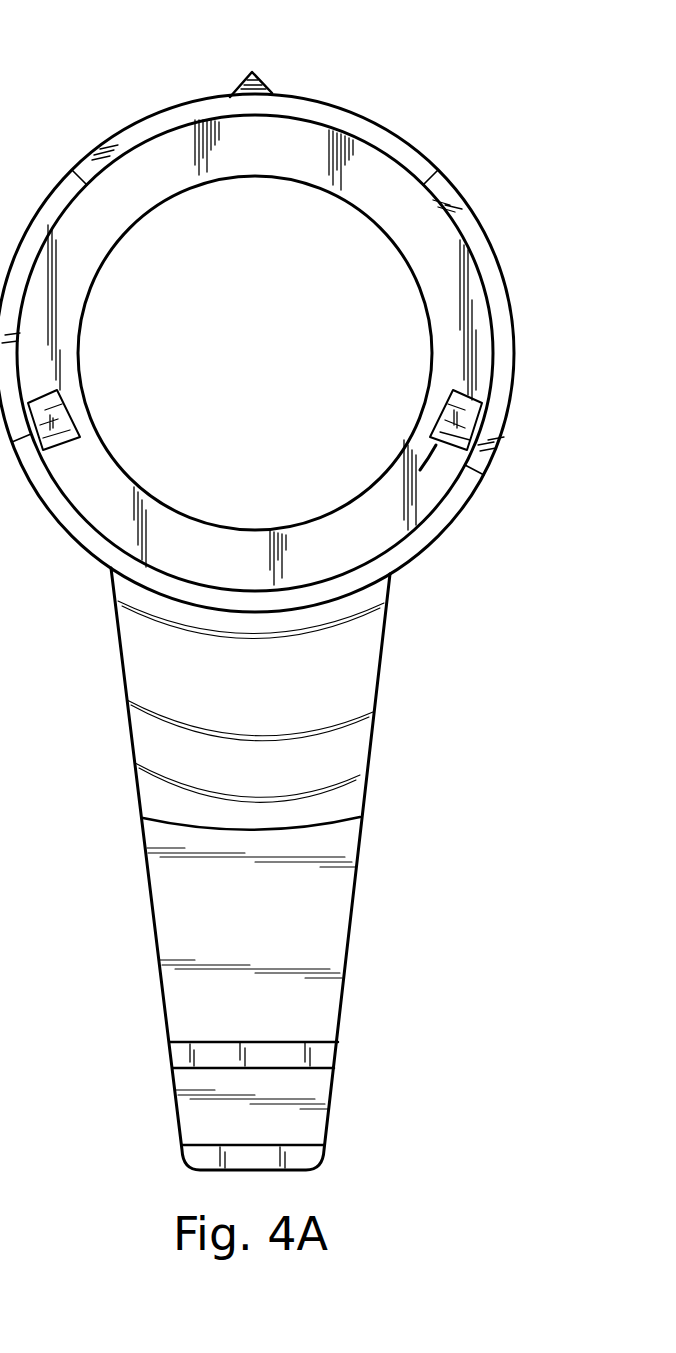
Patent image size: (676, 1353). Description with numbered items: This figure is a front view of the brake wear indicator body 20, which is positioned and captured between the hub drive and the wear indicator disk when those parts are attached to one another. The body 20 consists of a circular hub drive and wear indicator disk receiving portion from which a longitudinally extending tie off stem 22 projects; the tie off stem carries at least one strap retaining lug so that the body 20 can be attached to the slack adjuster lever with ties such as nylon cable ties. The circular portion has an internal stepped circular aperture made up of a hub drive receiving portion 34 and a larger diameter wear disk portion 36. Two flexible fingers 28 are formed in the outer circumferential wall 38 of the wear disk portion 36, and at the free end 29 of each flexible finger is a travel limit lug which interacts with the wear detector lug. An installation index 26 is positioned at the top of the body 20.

The body 20 is at (282, 590).
The tie off stem 22 is at (166, 907).
The installation index 26 is at (238, 88).
The flexible fingers 28 is at (478, 222).
The free end 29 is at (493, 455).
The hub drive receiving portion 34 is at (142, 213).
The wear disk portion 36 is at (346, 568).
The outer circumferential wall 38 is at (282, 348).